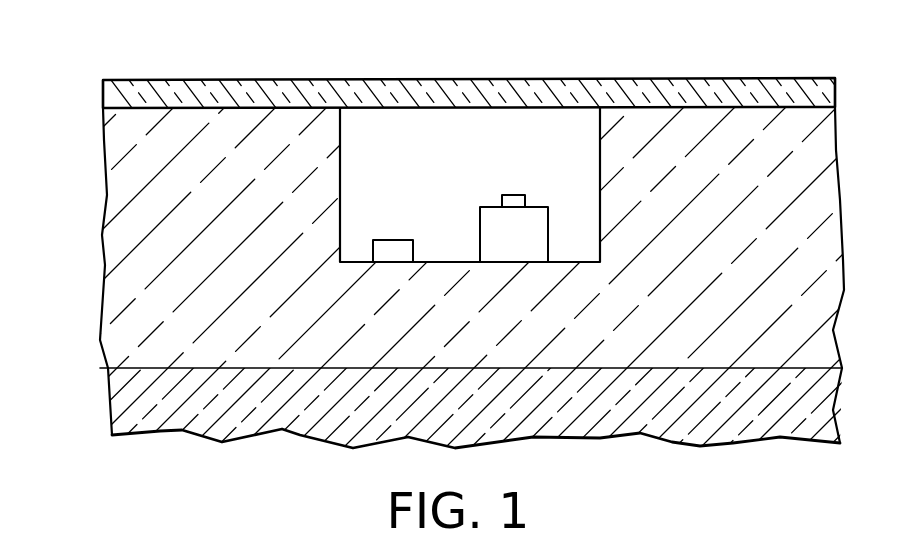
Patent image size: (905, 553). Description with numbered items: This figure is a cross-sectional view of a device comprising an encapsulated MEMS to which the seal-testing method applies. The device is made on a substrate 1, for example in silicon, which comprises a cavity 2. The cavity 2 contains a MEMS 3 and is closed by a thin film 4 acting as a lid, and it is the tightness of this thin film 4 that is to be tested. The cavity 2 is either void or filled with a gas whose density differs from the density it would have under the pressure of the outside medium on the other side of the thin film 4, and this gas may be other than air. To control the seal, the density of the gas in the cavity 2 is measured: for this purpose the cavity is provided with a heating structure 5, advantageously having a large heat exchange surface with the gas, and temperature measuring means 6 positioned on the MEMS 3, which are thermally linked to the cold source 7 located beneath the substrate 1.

The substrate 1 is at (117, 242).
The cavity 2 is at (405, 163).
The MEMS 3 is at (522, 253).
The thin film 4 is at (680, 93).
The heating structure 5 is at (392, 255).
The temperature measuring means 6 is at (515, 200).
The cold source 7 is at (108, 402).